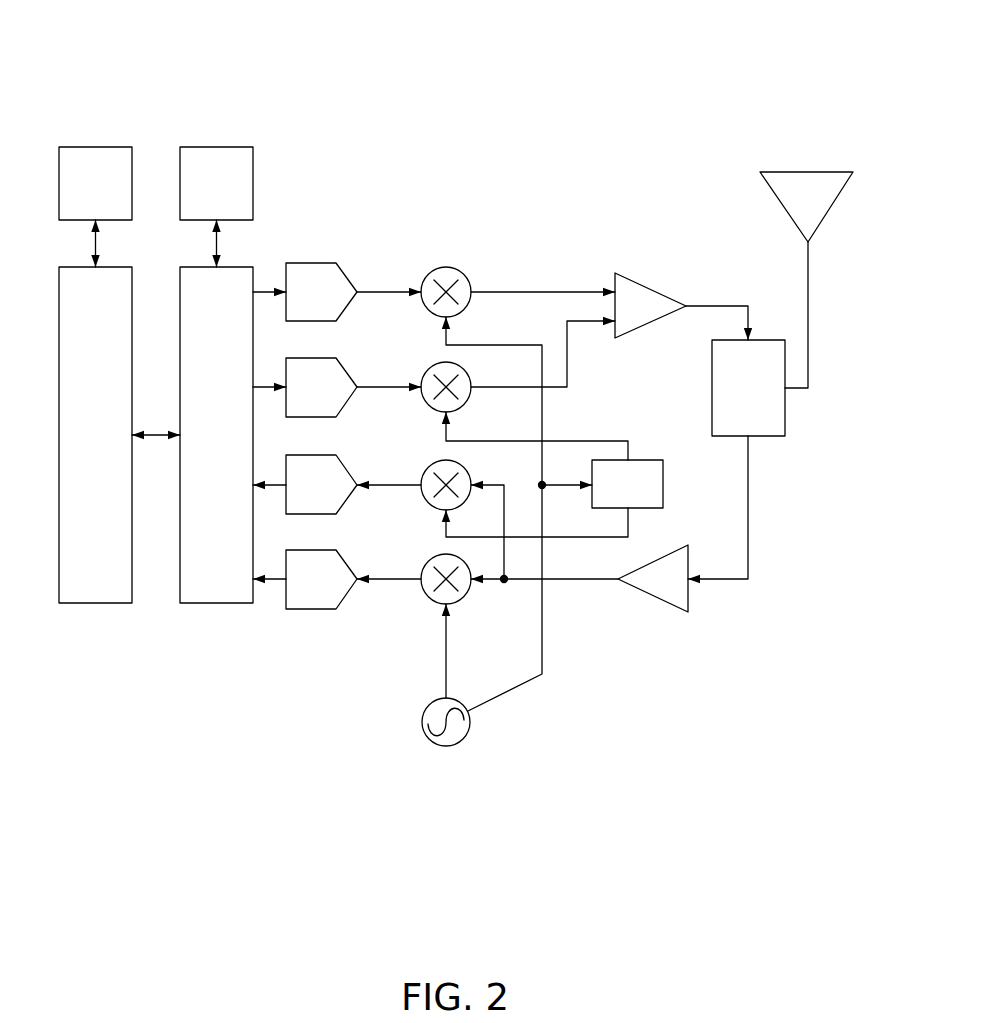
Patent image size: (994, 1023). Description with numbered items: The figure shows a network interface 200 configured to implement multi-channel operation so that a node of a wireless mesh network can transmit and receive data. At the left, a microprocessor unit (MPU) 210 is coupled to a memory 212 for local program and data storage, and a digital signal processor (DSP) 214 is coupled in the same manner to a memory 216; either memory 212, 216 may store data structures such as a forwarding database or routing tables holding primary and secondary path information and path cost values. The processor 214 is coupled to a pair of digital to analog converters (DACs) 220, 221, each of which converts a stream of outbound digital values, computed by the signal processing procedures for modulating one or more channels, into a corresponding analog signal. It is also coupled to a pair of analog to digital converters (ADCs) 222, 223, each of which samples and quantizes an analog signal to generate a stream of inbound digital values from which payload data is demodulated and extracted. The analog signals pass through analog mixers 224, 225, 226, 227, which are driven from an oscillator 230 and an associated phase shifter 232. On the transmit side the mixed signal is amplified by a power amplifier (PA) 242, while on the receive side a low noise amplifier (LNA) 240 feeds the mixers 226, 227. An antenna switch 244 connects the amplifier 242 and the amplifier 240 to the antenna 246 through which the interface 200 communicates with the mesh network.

The network interface 200 is at (606, 96).
The microprocessor unit 210 is at (76, 458).
The memory 212 is at (76, 207).
The digital signal processor 214 is at (197, 458).
The memory 216 is at (197, 207).
The digital to analog converter 220 is at (293, 315).
The digital to analog converter 221 is at (293, 410).
The analog to digital converter 222 is at (293, 508).
The analog to digital converter 223 is at (293, 603).
The analog mixer 224 is at (435, 268).
The analog mixer 225 is at (434, 364).
The analog mixer 226 is at (434, 462).
The analog mixer 227 is at (435, 556).
The oscillator 230 is at (425, 708).
The phase shifter 232 is at (609, 495).
The low noise amplifier 240 is at (648, 597).
The power amplifier 242 is at (635, 277).
The antenna switch 244 is at (729, 398).
The antenna 246 is at (777, 198).